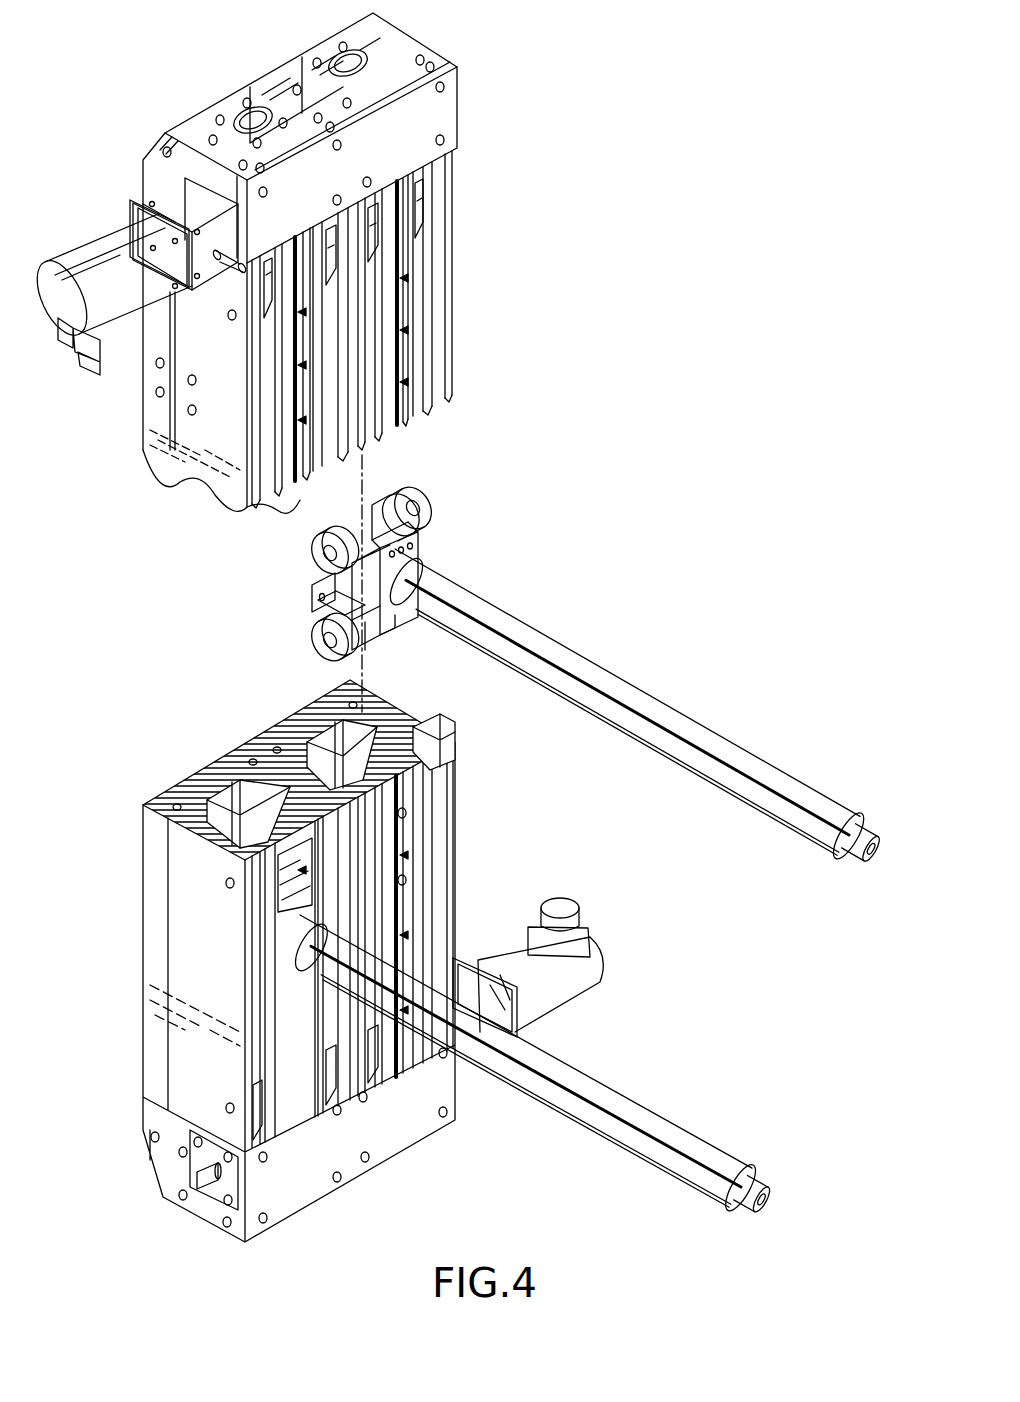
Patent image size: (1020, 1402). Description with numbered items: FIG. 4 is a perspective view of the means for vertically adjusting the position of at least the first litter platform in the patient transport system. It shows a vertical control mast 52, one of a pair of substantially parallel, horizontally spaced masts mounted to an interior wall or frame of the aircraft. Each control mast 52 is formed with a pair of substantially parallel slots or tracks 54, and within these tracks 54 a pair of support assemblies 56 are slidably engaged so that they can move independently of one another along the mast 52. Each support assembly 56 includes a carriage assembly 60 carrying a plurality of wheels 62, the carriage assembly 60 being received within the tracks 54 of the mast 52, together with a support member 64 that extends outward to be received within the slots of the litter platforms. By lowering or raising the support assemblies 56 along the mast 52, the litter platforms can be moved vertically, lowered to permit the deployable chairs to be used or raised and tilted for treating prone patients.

The vertical control mast 52 is at (138, 405).
The slot or track 54 is at (397, 403).
The support assembly 56 is at (553, 832).
The carriage assembly 60 is at (382, 580).
The wheel 62 is at (422, 492).
The support member 64 is at (518, 613).